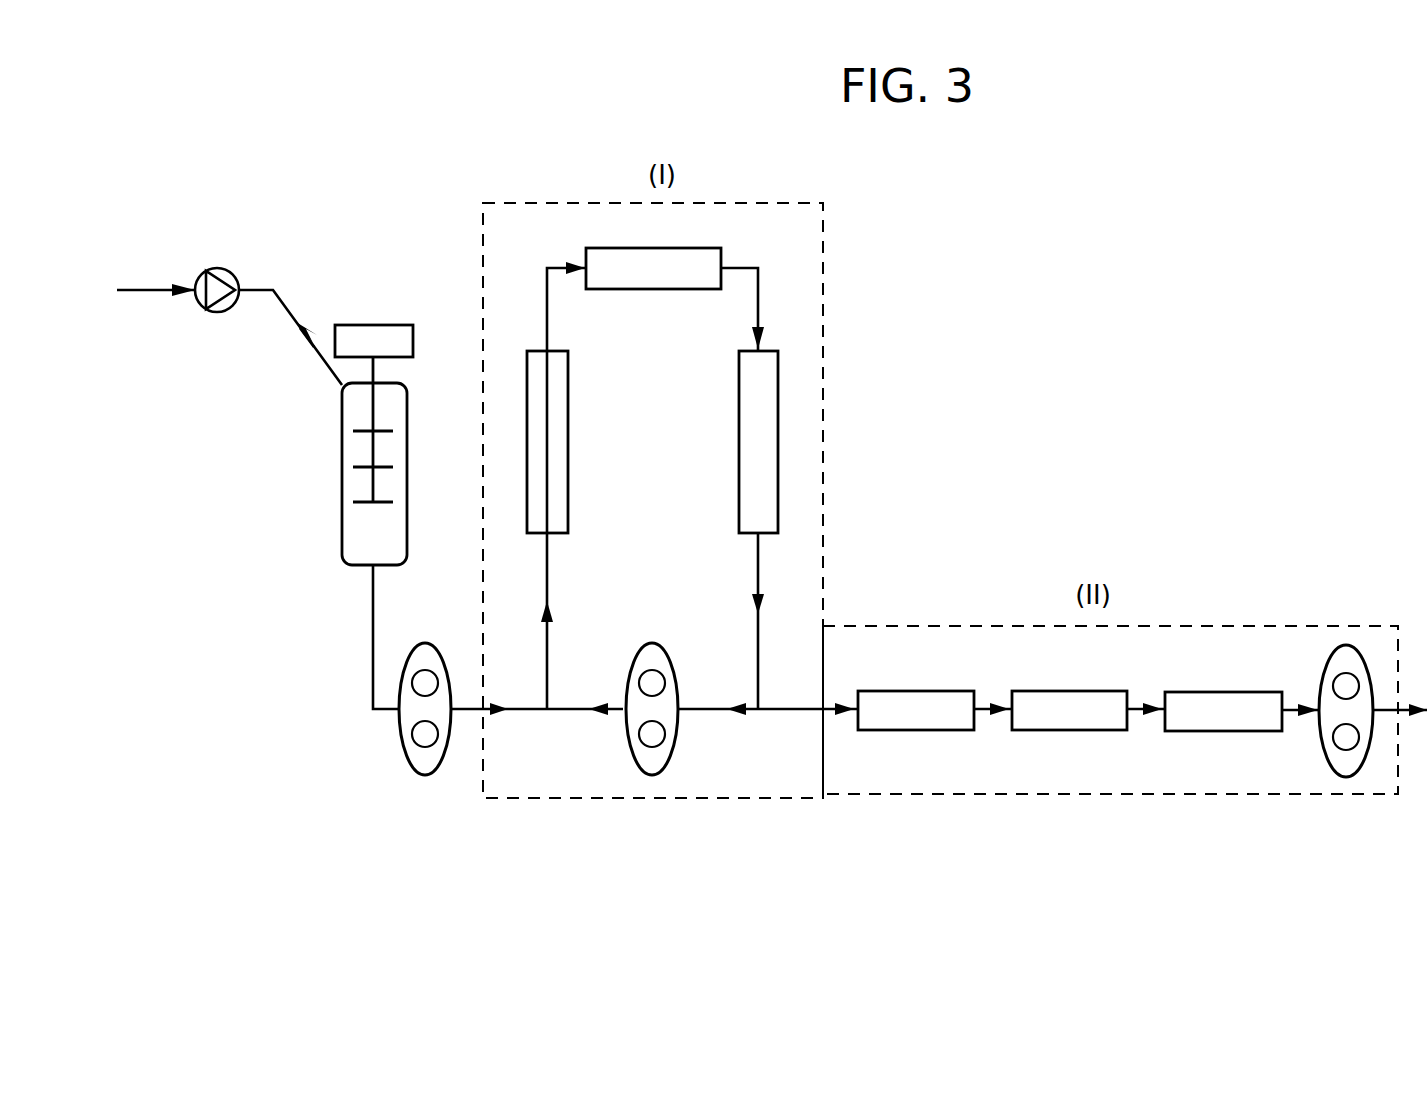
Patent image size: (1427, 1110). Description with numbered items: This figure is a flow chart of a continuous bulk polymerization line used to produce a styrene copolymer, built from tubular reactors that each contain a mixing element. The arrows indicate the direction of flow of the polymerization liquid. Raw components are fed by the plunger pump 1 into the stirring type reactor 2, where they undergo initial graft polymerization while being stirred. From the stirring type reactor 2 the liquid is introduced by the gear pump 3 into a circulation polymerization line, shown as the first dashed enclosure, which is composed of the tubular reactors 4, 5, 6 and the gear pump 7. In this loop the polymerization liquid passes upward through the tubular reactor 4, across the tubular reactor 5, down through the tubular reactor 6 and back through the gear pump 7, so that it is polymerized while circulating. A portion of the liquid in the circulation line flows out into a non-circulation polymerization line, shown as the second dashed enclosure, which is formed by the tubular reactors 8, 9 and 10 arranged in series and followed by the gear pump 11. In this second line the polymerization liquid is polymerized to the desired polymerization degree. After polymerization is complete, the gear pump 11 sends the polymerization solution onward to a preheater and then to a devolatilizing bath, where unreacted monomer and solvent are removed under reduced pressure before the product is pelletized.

The plunger pump 1 is at (233, 270).
The stirring type reactor 2 is at (408, 450).
The gear pump 3 is at (398, 742).
The tubular reactor 4 is at (568, 407).
The tubular reactor 5 is at (712, 252).
The tubular reactor 6 is at (778, 350).
The gear pump 7 is at (680, 732).
The tubular reactor 8 is at (953, 732).
The tubular reactor 9 is at (1087, 725).
The tubular reactor 10 is at (1200, 691).
The gear pump 11 is at (1320, 687).